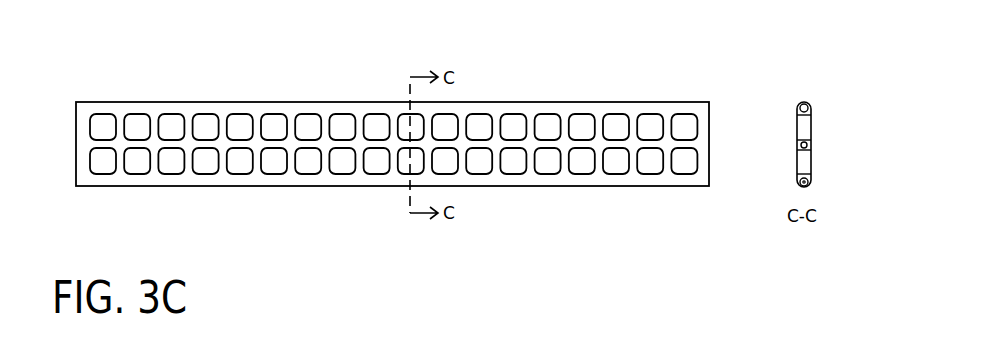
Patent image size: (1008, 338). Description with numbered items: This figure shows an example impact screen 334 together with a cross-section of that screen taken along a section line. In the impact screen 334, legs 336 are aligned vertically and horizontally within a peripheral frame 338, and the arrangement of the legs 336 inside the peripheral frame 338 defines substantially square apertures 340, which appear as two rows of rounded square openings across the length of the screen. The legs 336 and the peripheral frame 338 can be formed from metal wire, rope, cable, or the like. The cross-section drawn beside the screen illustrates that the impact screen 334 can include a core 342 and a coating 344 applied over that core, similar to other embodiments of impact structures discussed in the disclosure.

The impact screen 334 is at (172, 85).
The legs 336 is at (152, 178).
The peripheral frame 338 is at (670, 173).
The apertures 340 is at (269, 167).
The core 342 is at (801, 105).
The coating 344 is at (798, 108).